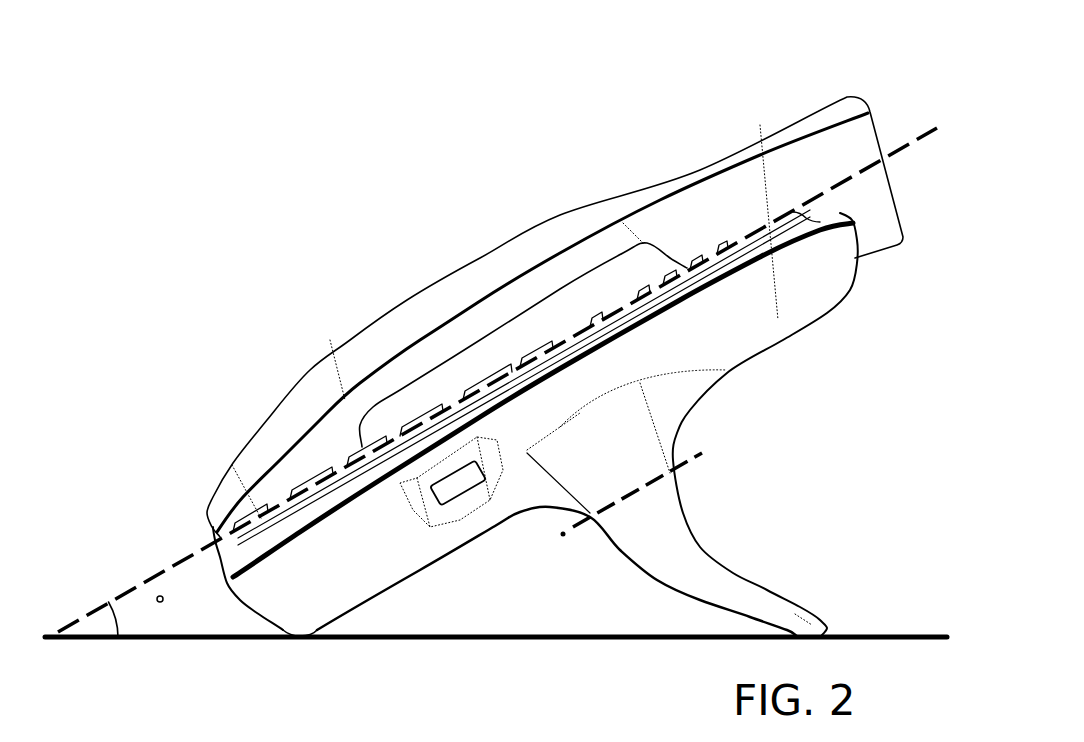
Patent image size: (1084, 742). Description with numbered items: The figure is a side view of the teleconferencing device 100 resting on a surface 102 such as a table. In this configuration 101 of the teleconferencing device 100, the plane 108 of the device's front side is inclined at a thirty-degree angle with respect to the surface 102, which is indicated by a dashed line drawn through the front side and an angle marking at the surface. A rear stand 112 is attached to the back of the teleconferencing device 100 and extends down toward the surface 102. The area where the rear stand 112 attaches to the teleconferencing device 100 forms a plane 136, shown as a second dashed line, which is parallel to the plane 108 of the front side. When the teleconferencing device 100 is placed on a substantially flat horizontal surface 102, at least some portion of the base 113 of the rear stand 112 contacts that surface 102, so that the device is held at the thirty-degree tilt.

The teleconferencing device 100 is at (518, 45).
The configuration 101 is at (301, 243).
The surface 102 is at (867, 618).
The plane 108 is at (907, 140).
The rear stand 112 is at (766, 549).
The base 113 is at (829, 600).
The plane 136 is at (689, 451).